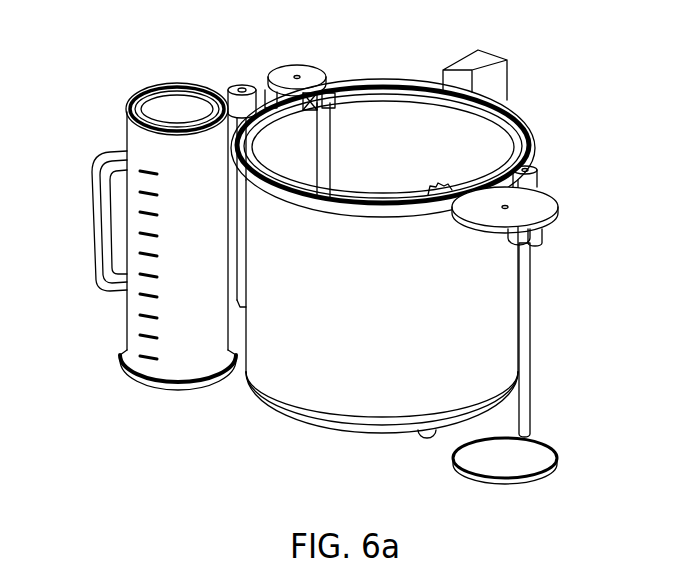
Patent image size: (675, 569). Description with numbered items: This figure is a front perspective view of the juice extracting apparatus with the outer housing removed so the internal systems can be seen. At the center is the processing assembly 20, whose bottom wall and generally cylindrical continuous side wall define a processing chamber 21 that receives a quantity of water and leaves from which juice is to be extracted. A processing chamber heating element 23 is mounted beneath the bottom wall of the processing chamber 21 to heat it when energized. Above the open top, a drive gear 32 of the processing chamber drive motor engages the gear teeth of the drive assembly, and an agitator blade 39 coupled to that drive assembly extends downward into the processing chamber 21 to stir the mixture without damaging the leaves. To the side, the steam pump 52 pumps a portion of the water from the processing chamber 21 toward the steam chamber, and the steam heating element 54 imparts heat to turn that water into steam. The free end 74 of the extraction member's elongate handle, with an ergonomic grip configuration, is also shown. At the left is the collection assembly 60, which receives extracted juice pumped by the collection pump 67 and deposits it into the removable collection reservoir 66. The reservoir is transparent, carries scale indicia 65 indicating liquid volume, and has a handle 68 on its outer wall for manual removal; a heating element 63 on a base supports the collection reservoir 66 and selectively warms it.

The processing assembly 20 is at (543, 120).
The processing chamber 21 is at (464, 151).
The processing chamber heating element 23 is at (302, 418).
The drive gear 32 is at (315, 72).
The agitator blade 39 is at (338, 123).
The steam pump 52 is at (539, 174).
The steam heating element 54 is at (535, 455).
The collection assembly 60 is at (106, 136).
The heating element 63 is at (205, 388).
The scale indicia 65 is at (143, 297).
The collection reservoir 66 is at (175, 362).
The collection pump 67 is at (245, 87).
The handle 68 is at (93, 199).
The free end 74 is at (535, 237).